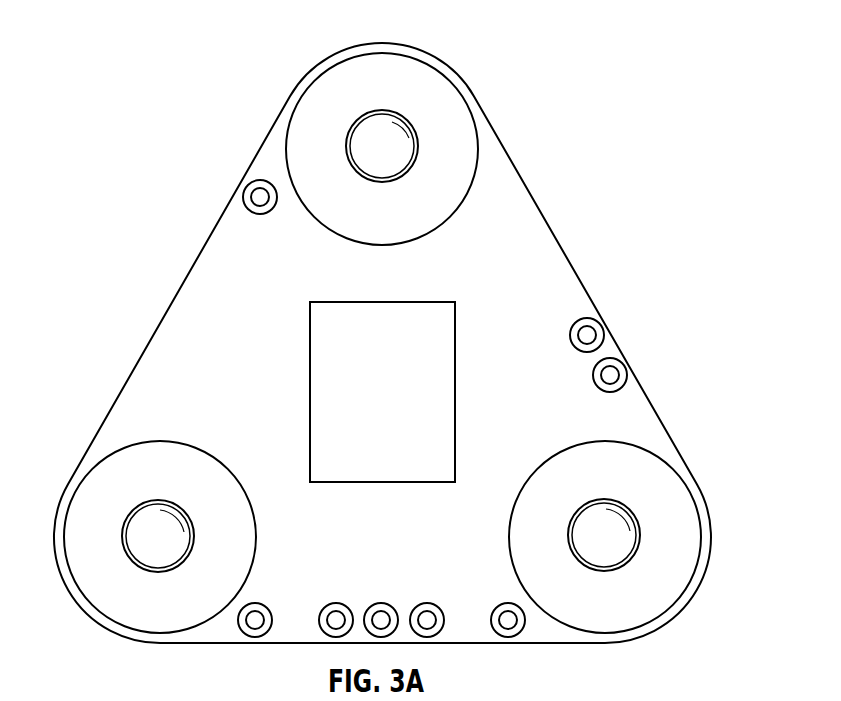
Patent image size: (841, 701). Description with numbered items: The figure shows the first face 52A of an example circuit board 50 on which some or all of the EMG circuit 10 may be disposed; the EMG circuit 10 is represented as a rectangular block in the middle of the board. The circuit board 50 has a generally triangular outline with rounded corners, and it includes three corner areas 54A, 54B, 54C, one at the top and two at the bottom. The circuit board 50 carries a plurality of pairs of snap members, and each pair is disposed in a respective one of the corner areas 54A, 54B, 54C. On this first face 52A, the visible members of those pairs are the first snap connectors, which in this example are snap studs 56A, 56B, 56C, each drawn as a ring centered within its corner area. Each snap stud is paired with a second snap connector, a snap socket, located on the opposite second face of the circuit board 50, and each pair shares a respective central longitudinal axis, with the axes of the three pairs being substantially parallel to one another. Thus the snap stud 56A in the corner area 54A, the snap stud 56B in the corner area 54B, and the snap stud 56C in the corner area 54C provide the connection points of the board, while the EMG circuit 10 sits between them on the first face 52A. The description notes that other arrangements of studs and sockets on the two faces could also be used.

The EMG circuit 10 is at (390, 302).
The circuit board 50 is at (399, 340).
The first face 52A is at (148, 403).
The corner area 54A is at (424, 130).
The corner area 54B is at (139, 553).
The corner area 54C is at (643, 553).
The snap stud 56A is at (372, 137).
The snap stud 56B is at (153, 537).
The snap stud 56C is at (607, 532).